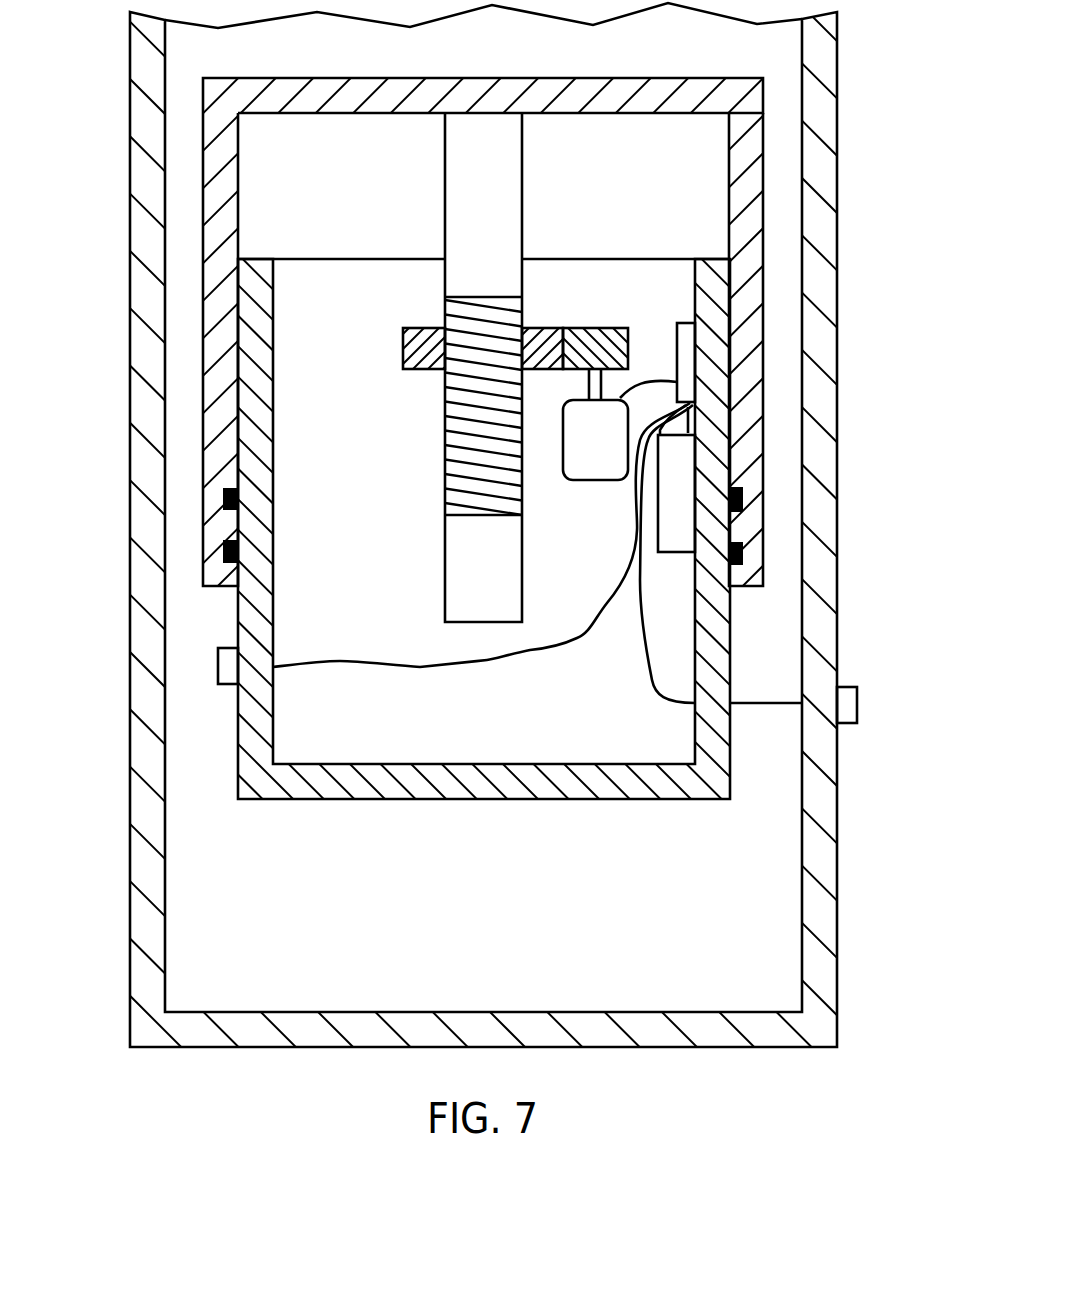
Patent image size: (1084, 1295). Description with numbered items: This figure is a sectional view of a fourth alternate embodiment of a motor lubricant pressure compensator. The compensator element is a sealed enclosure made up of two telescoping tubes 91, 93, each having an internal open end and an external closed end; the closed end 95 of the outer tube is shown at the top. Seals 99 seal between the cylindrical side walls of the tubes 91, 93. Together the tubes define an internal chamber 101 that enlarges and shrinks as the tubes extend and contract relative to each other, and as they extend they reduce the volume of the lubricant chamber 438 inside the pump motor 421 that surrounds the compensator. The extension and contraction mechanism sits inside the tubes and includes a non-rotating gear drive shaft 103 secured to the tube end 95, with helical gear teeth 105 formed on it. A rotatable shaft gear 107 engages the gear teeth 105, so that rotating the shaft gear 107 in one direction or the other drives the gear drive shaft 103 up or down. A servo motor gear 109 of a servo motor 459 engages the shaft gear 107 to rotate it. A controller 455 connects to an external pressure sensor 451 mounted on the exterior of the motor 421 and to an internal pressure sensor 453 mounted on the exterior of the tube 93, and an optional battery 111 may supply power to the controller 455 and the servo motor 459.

The telescoping tube 91 is at (753, 260).
The telescoping tube 93 is at (722, 637).
The closed end 95 is at (398, 87).
The seals 99 is at (747, 492).
The internal chamber 101 is at (368, 201).
The gear drive shaft 103 is at (512, 177).
The helical gear teeth 105 is at (518, 308).
The shaft gear 107 is at (403, 352).
The servo motor gear 109 is at (602, 327).
The battery 111 is at (686, 540).
The pump motor 421 is at (848, 360).
The lubricant chamber 438 is at (787, 852).
The external pressure sensor 451 is at (848, 703).
The internal pressure sensor 453 is at (225, 660).
The controller 455 is at (687, 337).
The servo motor 459 is at (612, 478).